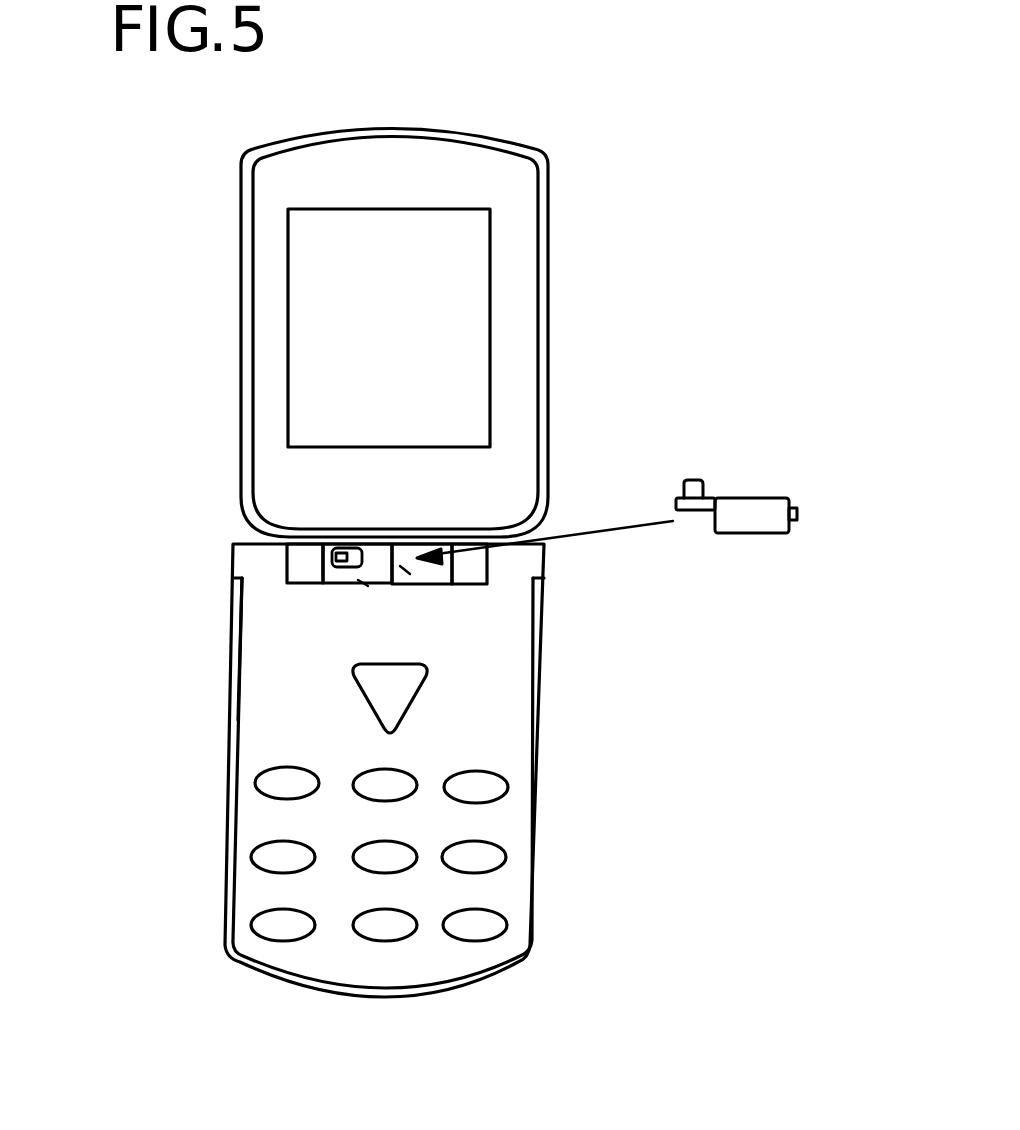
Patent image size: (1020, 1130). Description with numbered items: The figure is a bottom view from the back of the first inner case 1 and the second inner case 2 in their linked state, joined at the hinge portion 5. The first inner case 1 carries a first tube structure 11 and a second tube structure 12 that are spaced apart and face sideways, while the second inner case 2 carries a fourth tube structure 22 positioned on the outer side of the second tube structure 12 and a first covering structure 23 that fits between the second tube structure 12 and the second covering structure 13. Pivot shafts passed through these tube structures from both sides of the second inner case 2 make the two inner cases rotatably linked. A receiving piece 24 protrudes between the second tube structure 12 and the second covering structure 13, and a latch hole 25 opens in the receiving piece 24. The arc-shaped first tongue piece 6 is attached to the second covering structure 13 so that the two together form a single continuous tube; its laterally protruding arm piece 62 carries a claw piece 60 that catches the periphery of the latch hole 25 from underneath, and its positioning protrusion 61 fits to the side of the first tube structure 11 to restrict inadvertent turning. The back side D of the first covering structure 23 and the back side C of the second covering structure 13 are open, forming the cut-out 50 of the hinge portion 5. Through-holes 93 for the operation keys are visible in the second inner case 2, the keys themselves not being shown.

The first inner case 1 is at (520, 358).
The second inner case 2 is at (505, 742).
The hinge portion 5 is at (218, 521).
The first tongue piece 6 is at (745, 533).
The first tube structure 11 is at (467, 574).
The second tube structure 12 is at (303, 567).
The second covering structure 13 is at (407, 534).
The fourth tube structure 22 is at (265, 582).
The first covering structure 23 is at (345, 583).
The receiving piece 24 is at (332, 553).
The latch hole 25 is at (352, 552).
The cut-out 50 is at (405, 570).
The claw piece 60 is at (698, 480).
The positioning protrusion 61 is at (800, 505).
The arm piece 62 is at (690, 512).
The through-holes 93 is at (482, 847).